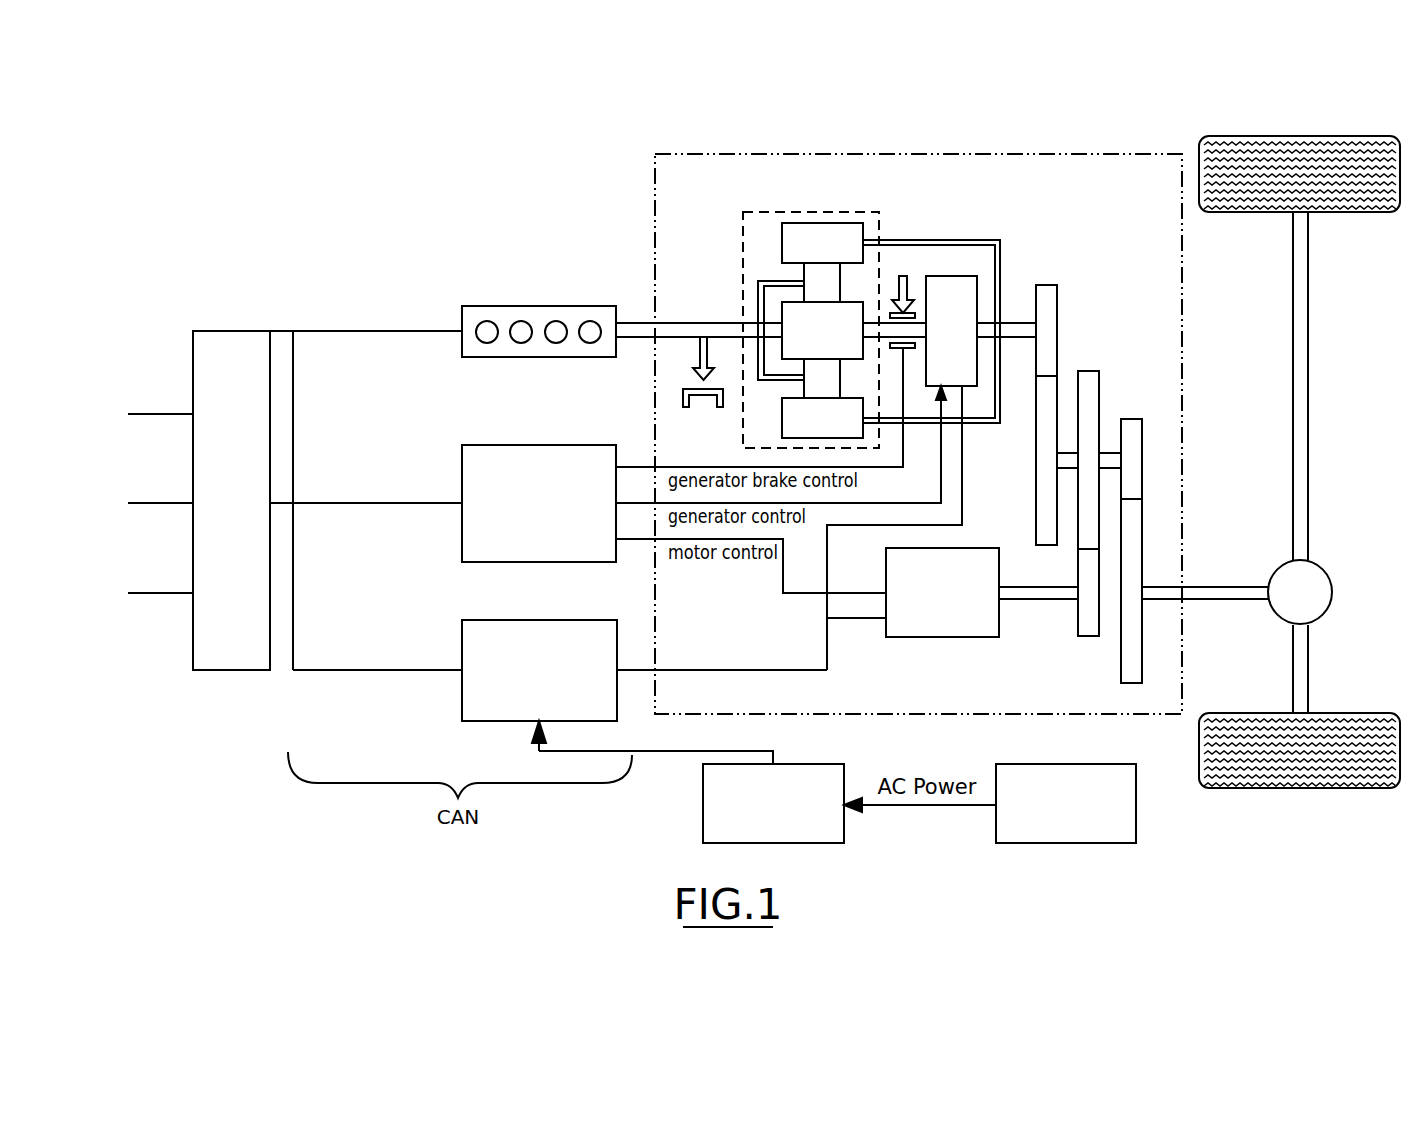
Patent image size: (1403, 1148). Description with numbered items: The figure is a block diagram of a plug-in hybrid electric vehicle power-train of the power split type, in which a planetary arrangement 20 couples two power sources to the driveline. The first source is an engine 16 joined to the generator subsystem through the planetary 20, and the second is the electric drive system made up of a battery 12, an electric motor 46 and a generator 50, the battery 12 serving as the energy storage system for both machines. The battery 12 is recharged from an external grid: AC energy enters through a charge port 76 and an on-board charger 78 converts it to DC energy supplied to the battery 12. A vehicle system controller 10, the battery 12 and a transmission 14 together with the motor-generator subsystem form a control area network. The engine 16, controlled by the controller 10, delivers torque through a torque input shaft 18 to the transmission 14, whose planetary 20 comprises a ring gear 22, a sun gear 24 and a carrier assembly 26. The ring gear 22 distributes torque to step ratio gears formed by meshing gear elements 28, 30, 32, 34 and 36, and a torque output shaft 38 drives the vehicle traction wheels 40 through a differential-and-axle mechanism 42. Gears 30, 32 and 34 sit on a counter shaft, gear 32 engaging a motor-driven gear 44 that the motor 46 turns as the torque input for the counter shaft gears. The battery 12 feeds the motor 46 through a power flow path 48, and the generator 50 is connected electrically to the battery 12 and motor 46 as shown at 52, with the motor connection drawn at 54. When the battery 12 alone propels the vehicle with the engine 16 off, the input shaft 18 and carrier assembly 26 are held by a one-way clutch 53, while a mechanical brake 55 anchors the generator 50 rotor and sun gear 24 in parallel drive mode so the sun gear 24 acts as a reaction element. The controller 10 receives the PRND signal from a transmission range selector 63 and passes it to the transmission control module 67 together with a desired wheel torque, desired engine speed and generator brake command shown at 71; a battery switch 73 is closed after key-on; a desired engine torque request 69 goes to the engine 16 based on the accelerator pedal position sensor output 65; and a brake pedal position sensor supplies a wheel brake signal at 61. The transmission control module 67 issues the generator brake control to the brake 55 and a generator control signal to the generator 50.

The vehicle system controller 10 is at (233, 331).
The battery 12 is at (508, 721).
The transmission 14 is at (872, 716).
The engine 16 is at (500, 306).
The torque input shaft 18 is at (645, 323).
The planetary arrangement 20 is at (842, 309).
The ring gear 22 is at (782, 243).
The sun gear 24 is at (782, 318).
The carrier assembly 26 is at (758, 290).
The meshing gear element 28 is at (1058, 302).
The meshing gear element 30 is at (1036, 505).
The meshing gear element 32 is at (1088, 371).
The meshing gear element 34 is at (1130, 419).
The meshing gear element 36 is at (1142, 530).
The torque output shaft 38 is at (1195, 585).
The vehicle traction wheels 40 is at (1323, 136).
The differential-and-axle mechanism 42 is at (1333, 592).
The motor-driven gear 44 is at (1085, 636).
The electric motor 46 is at (955, 637).
The power flow path 48 is at (705, 670).
The generator 50 is at (977, 283).
The generator electrical connection 52 is at (843, 527).
The one-way clutch 53 is at (700, 360).
The motor electrical connection 54 is at (841, 620).
The mechanical brake 55 is at (908, 290).
The wheel brake signal 61 is at (145, 594).
The transmission range selector 63 is at (145, 415).
The accelerator pedal position sensor output 65 is at (145, 504).
The transmission control module 67 is at (580, 445).
The desired engine torque request 69 is at (328, 333).
The desired wheel torque, desired engine speed and generator brake command 71 is at (328, 505).
The battery switch 73 is at (328, 672).
The charge port 76 is at (1050, 843).
The on-board charger 78 is at (790, 843).